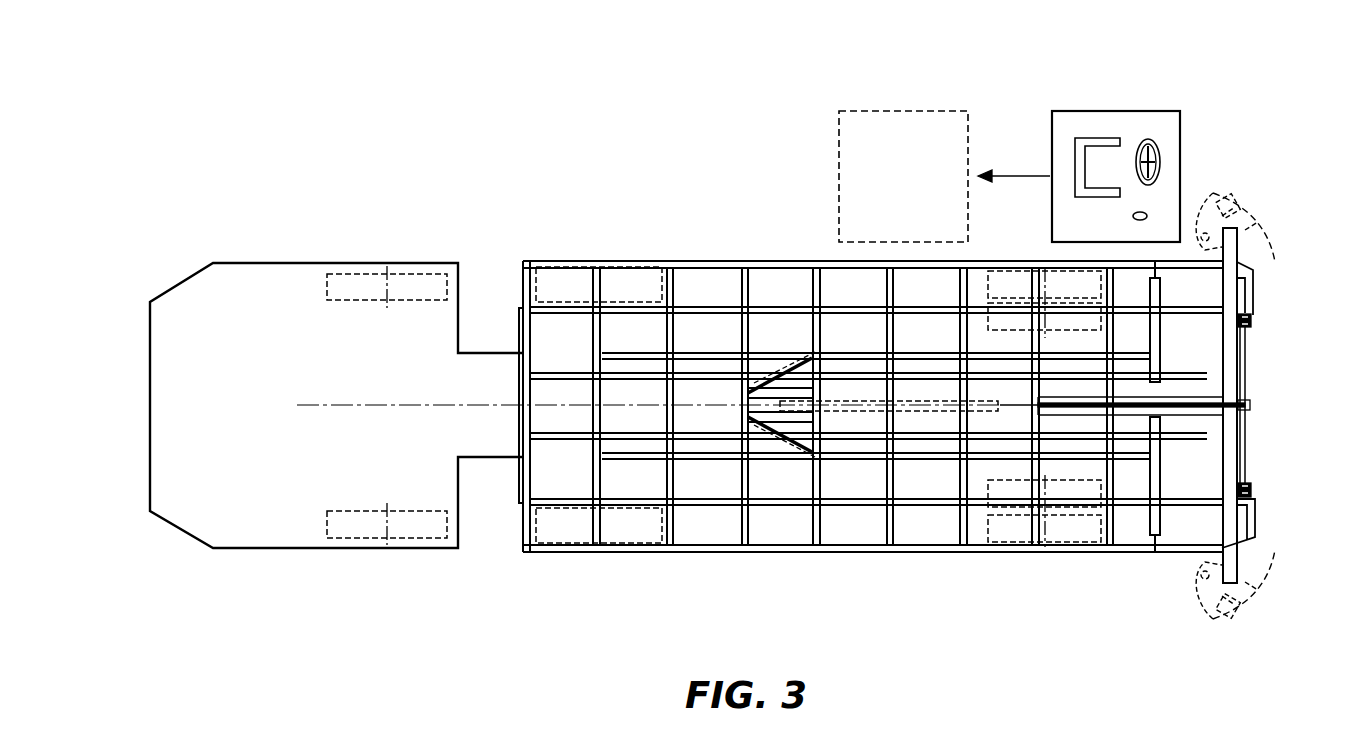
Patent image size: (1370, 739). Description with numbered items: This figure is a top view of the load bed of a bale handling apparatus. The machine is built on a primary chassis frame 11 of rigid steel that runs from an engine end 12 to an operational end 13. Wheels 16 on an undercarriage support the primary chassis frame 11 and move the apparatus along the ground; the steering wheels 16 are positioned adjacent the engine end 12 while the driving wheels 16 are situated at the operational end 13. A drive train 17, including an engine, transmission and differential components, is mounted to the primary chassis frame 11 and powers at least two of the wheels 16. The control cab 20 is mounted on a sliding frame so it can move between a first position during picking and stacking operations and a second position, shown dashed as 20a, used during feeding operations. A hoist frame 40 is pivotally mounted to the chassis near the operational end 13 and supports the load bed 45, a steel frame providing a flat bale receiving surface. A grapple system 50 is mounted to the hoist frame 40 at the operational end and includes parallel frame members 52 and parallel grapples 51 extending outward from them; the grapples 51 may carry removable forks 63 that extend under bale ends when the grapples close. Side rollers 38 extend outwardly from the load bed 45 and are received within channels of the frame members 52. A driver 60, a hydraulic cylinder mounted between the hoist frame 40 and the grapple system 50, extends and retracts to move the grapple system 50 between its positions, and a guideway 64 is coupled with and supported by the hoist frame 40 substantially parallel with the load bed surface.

The primary chassis frame 11 is at (487, 362).
The engine end 12 is at (140, 414).
The operational end 13 is at (1284, 411).
The wheels 16 is at (370, 285).
The drive train 17 is at (190, 300).
The control cab 20 is at (1155, 111).
The control cab second position 20a is at (968, 111).
The side rollers 38 is at (1253, 319).
The hoist frame 40 is at (648, 458).
The load bed 45 is at (600, 268).
The grapple system 50 is at (1248, 366).
The grapples 51 is at (1232, 204).
The frame members 52 is at (1251, 325).
The driver 60 is at (848, 398).
The forks 63 is at (1266, 229).
The guideway 64 is at (1226, 409).